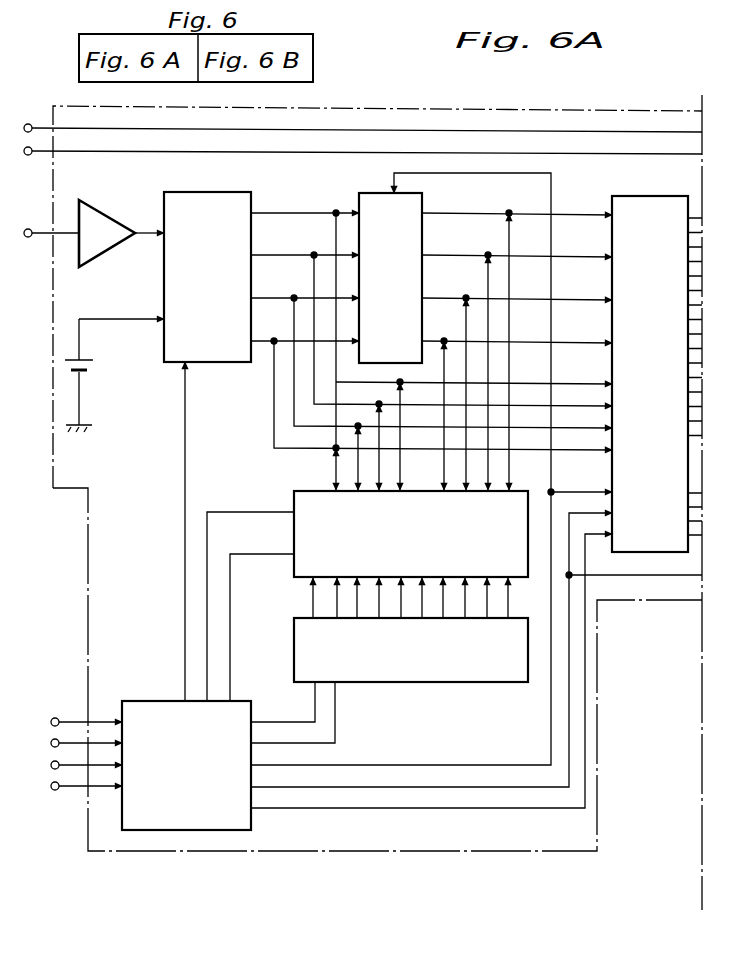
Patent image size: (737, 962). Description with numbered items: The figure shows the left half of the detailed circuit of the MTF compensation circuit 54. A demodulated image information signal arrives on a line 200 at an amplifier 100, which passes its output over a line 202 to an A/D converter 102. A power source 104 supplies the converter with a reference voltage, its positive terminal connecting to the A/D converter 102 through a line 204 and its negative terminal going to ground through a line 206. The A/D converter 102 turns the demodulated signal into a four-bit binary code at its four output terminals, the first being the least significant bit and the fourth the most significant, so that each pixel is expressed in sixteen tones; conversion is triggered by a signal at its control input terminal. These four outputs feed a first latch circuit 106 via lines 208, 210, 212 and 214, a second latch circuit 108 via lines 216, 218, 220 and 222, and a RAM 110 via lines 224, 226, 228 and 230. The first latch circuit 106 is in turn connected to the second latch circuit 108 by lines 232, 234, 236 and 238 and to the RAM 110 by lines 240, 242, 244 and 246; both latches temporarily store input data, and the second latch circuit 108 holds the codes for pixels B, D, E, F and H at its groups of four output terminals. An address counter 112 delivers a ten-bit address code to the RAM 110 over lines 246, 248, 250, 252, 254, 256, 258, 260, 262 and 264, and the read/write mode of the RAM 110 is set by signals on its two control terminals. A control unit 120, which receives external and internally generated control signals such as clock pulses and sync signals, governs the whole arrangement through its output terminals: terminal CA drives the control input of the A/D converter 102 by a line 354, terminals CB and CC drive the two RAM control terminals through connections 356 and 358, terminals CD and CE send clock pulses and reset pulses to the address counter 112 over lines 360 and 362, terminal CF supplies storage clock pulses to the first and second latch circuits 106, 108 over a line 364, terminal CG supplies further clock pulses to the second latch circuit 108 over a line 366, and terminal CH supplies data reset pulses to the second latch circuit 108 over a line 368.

The MTF compensation circuit 54 is at (88, 527).
The amplifier 100 is at (113, 211).
The A/D converter 102 is at (214, 192).
The power source 104 is at (96, 367).
The first latch circuit 106 is at (369, 191).
The second latch circuit 108 is at (652, 196).
The RAM 110 is at (293, 538).
The address counter 112 is at (417, 684).
The control unit 120 is at (163, 832).
The line 200 is at (30, 238).
The line 202 is at (141, 240).
The line 204 is at (123, 318).
The line 206 is at (78, 398).
The line 208 is at (264, 339).
The line 210 is at (274, 296).
The line 212 is at (292, 253).
The line 214 is at (292, 211).
The line 216 is at (272, 441).
The line 218 is at (294, 410).
The line 220 is at (313, 386).
The line 222 is at (335, 364).
The line 224 is at (345, 460).
The line 226 is at (358, 463).
The line 228 is at (379, 470).
The line 230 is at (400, 478).
The line 232 is at (580, 341).
The line 234 is at (580, 298).
The line 236 is at (580, 255).
The line 238 is at (580, 212).
The line 240 is at (509, 456).
The line 242 is at (487, 455).
The line 244 is at (470, 468).
The line 246 is at (432, 450).
The line 248 is at (401, 594).
The line 250 is at (380, 600).
The line 252 is at (357, 603).
The line 254 is at (337, 596).
The line 256 is at (422, 610).
The line 258 is at (443, 606).
The line 260 is at (465, 601).
The line 262 is at (487, 597).
The line 264 is at (505, 591).
The line 354 is at (185, 393).
The RAM control line C1 356 is at (217, 510).
The RAM control line C2 358 is at (240, 552).
The line 360 is at (272, 722).
The line 362 is at (320, 745).
The line 364 is at (377, 767).
The line 366 is at (432, 787).
The line 368 is at (497, 807).